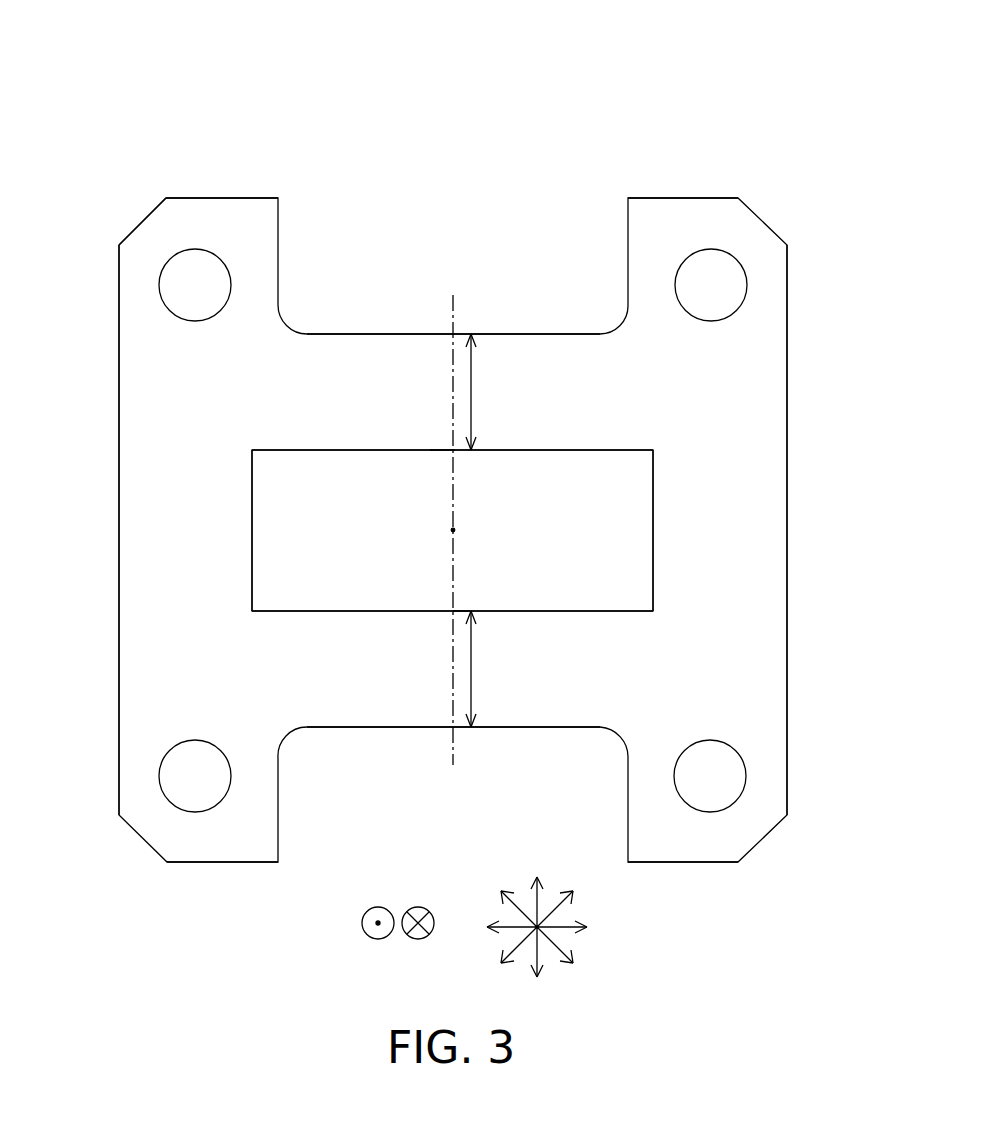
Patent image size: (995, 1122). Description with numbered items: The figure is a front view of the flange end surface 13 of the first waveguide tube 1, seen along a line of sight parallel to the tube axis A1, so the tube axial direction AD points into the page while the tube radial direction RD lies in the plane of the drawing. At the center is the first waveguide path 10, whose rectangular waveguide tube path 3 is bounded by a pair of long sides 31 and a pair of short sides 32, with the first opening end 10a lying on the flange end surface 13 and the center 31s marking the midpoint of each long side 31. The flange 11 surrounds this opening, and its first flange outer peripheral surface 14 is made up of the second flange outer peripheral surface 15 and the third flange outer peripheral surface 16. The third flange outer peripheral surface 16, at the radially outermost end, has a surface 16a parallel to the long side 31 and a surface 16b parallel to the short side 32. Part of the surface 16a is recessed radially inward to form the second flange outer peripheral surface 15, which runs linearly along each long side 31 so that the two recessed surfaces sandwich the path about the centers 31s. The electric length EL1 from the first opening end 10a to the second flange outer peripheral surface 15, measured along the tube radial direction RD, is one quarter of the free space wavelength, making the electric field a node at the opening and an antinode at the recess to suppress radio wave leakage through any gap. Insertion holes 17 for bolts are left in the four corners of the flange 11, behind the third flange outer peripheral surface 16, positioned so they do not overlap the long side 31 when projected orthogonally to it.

The first waveguide tube 1 is at (458, 143).
The rectangular waveguide tube path 3 is at (452, 530).
The first waveguide path 10 is at (384, 550).
The first opening end 10a is at (431, 450).
The flange 11 is at (153, 208).
The flange end surface 13 is at (333, 405).
The first flange outer peripheral surface 14 is at (100, 12).
The second flange outer peripheral surface 15 is at (392, 334).
The third flange outer peripheral surface 16 is at (135, 228).
The surface parallel to the long side 16a is at (236, 198).
The surface parallel to the short side 16b is at (119, 513).
The insertion hole 17 is at (209, 299).
The long side 31 is at (293, 450).
The center of the long side 31s is at (455, 450).
The short side 32 is at (252, 565).
The tube axis A1 is at (456, 530).
The electric length EL1 is at (472, 380).
The tube axial direction AD is at (398, 907).
The tube radial direction RD is at (537, 909).